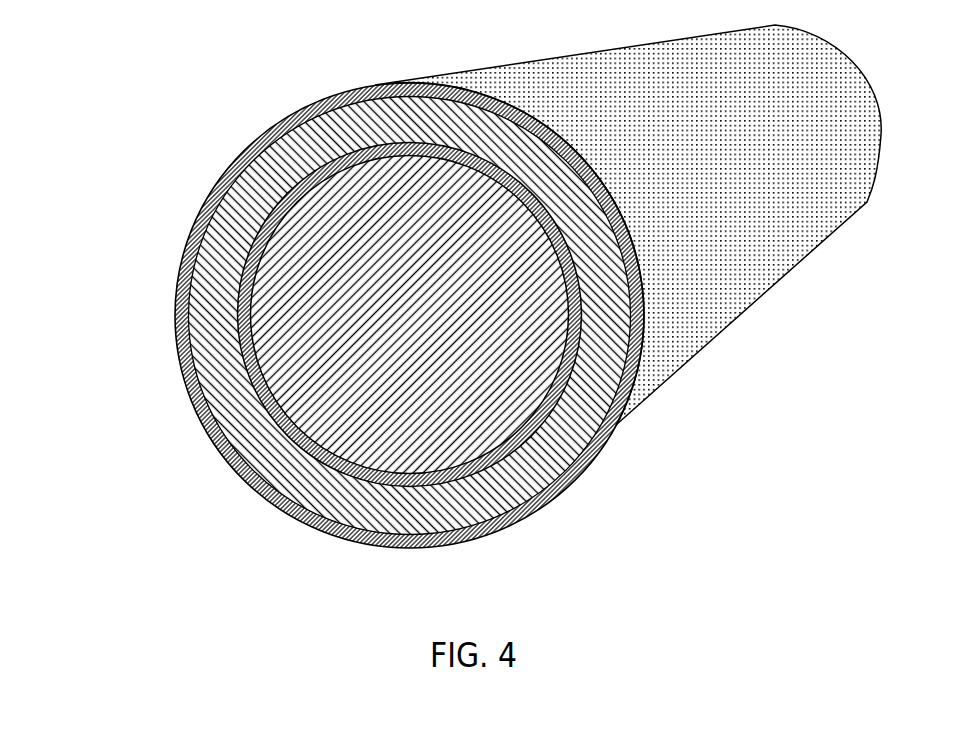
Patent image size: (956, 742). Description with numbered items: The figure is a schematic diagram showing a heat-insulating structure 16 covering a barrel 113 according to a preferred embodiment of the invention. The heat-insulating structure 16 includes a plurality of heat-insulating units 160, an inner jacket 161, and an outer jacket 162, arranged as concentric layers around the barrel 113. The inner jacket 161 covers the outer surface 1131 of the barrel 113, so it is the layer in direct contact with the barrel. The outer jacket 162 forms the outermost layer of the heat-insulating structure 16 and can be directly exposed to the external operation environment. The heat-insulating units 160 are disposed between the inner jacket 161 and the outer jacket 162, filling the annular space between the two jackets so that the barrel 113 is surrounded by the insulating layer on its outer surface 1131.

The heat-insulating structure 16 is at (343, 315).
The heat-insulating units 160 is at (234, 226).
The inner jacket 161 is at (243, 353).
The outer jacket 162 is at (218, 192).
The barrel 113 is at (567, 490).
The outer surface 1131 is at (492, 413).